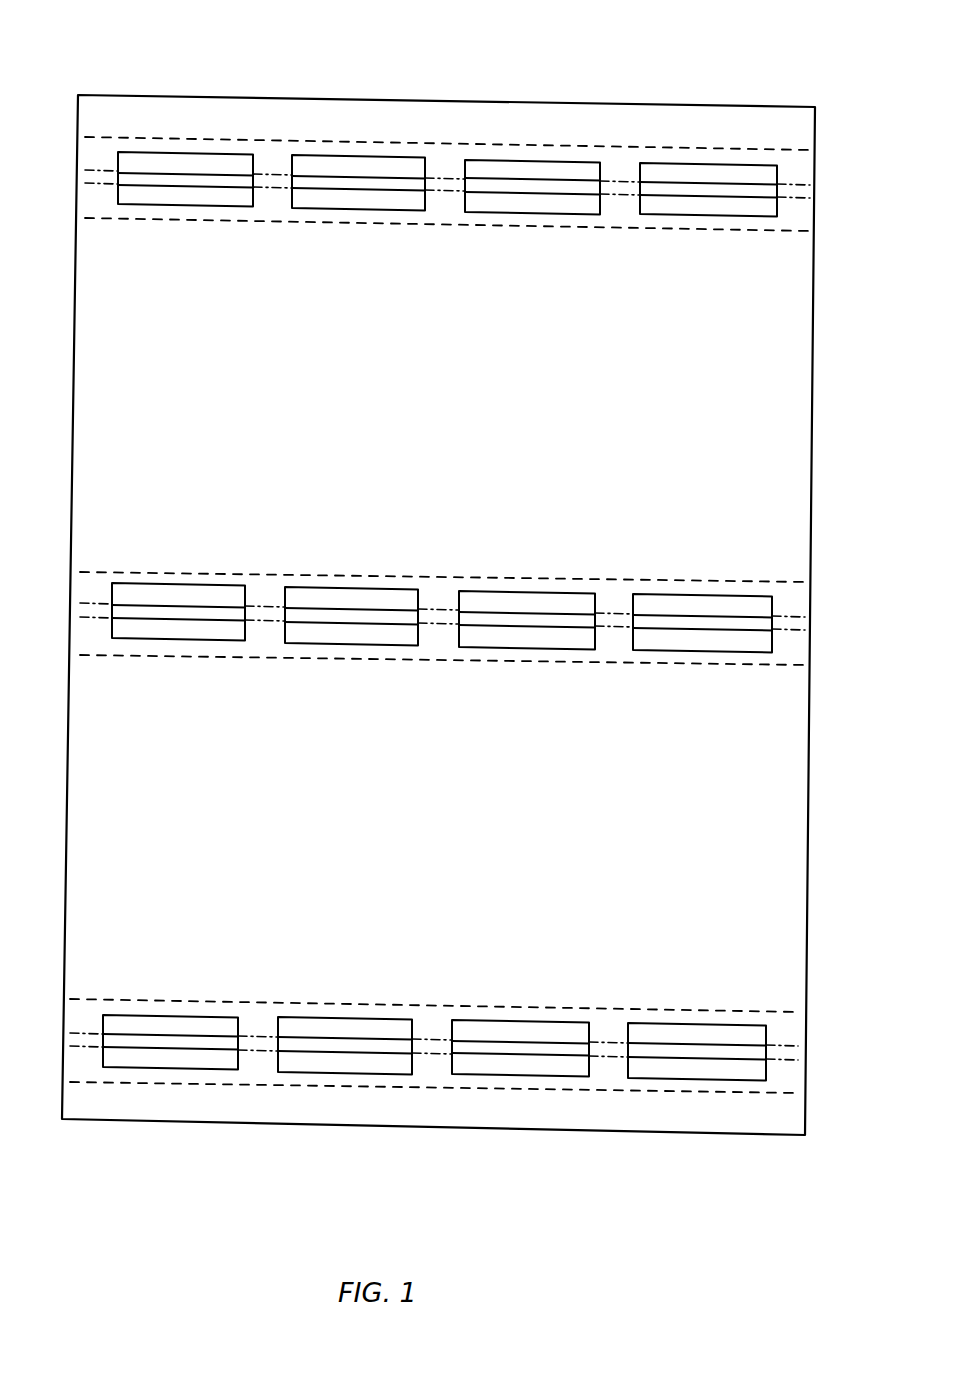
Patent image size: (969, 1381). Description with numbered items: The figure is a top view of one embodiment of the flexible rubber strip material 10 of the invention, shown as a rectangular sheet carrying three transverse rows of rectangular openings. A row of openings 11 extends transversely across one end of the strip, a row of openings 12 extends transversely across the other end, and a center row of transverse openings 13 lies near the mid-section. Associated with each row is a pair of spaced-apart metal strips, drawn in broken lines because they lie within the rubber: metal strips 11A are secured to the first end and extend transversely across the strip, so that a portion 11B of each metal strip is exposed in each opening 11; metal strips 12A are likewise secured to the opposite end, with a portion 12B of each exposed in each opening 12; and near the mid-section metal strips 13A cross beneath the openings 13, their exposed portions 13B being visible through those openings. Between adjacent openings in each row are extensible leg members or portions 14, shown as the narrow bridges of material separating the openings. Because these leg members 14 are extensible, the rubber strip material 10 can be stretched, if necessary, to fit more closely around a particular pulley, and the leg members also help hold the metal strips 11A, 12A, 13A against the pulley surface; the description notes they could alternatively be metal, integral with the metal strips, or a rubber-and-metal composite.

The flexible rubber strip material 10 is at (337, 95).
The openings 11 is at (120, 183).
The metal strips 11A is at (752, 148).
The portion 11B is at (383, 203).
The openings 12 is at (104, 1038).
The metal strips 12A is at (755, 1010).
The portion 12B is at (513, 1070).
The transverse openings 13 is at (768, 624).
The metal strips 13A is at (690, 580).
The portions 13B is at (485, 638).
The extensible leg members 14 is at (262, 180).